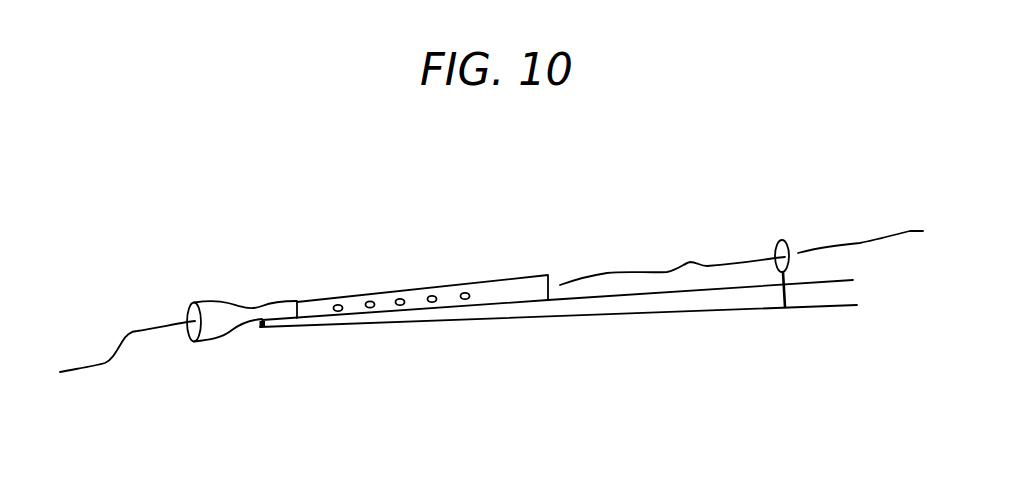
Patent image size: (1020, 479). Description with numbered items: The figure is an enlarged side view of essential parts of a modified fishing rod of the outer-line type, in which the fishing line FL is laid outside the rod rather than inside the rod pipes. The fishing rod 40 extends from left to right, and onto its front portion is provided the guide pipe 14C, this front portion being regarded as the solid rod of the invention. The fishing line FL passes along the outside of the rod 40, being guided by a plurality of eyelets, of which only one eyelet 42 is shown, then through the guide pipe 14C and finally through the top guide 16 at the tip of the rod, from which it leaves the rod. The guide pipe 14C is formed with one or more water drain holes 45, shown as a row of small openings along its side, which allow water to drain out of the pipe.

The fishing line FL is at (90, 367).
The top guide 16 is at (213, 298).
The guide pipe 14C is at (413, 297).
The water drain holes 45 is at (466, 295).
The fishing rod 40 is at (450, 317).
The eyelet 42 is at (784, 240).